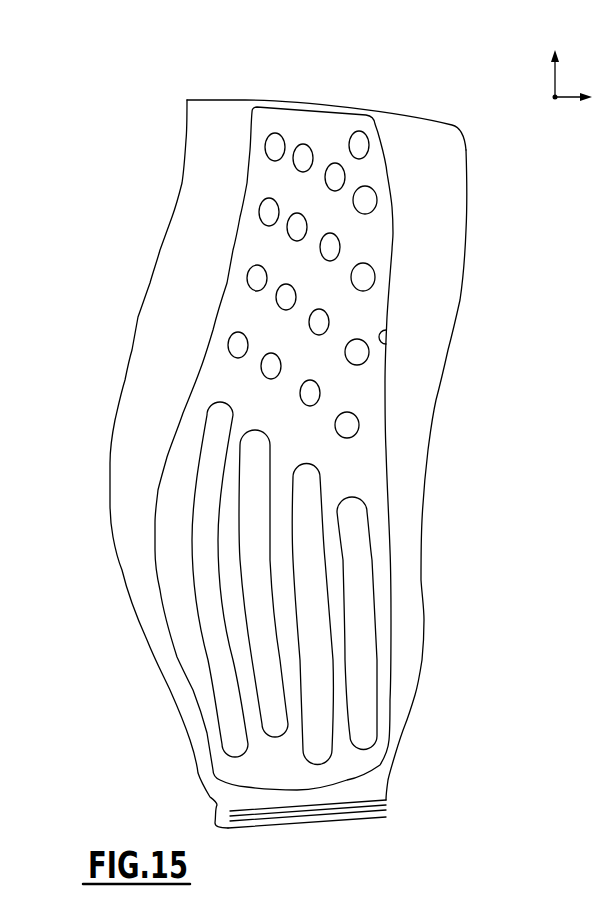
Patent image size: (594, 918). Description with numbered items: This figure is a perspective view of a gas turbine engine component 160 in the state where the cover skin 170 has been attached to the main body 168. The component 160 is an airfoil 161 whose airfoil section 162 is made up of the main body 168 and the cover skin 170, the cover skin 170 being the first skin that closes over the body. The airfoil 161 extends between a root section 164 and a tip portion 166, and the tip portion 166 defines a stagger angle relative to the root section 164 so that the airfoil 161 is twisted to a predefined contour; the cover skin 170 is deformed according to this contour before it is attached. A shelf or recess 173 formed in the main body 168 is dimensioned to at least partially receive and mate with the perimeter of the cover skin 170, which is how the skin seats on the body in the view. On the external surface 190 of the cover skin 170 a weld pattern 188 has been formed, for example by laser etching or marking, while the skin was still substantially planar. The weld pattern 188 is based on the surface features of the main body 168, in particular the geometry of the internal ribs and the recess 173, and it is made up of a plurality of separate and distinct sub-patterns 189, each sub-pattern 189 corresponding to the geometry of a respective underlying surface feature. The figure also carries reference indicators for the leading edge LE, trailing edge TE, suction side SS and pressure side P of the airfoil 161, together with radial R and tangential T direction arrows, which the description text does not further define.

The component 160 is at (146, 49).
The airfoil 161 is at (222, 86).
The airfoil section 162 is at (455, 207).
The root section 164 is at (387, 805).
The tip portion 166 is at (277, 100).
The main body 168 is at (437, 137).
The cover skin 170 is at (352, 123).
The recess 173 is at (386, 342).
The weld pattern 188 is at (386, 175).
The sub-patterns 189 is at (376, 206).
The external surface 190 is at (370, 403).
The leading edge LE is at (115, 415).
The trailing edge TE is at (428, 448).
The suction side SS is at (447, 300).
The pressure side P is at (385, 375).
The radial direction R is at (569, 62).
The tangential direction T is at (552, 97).